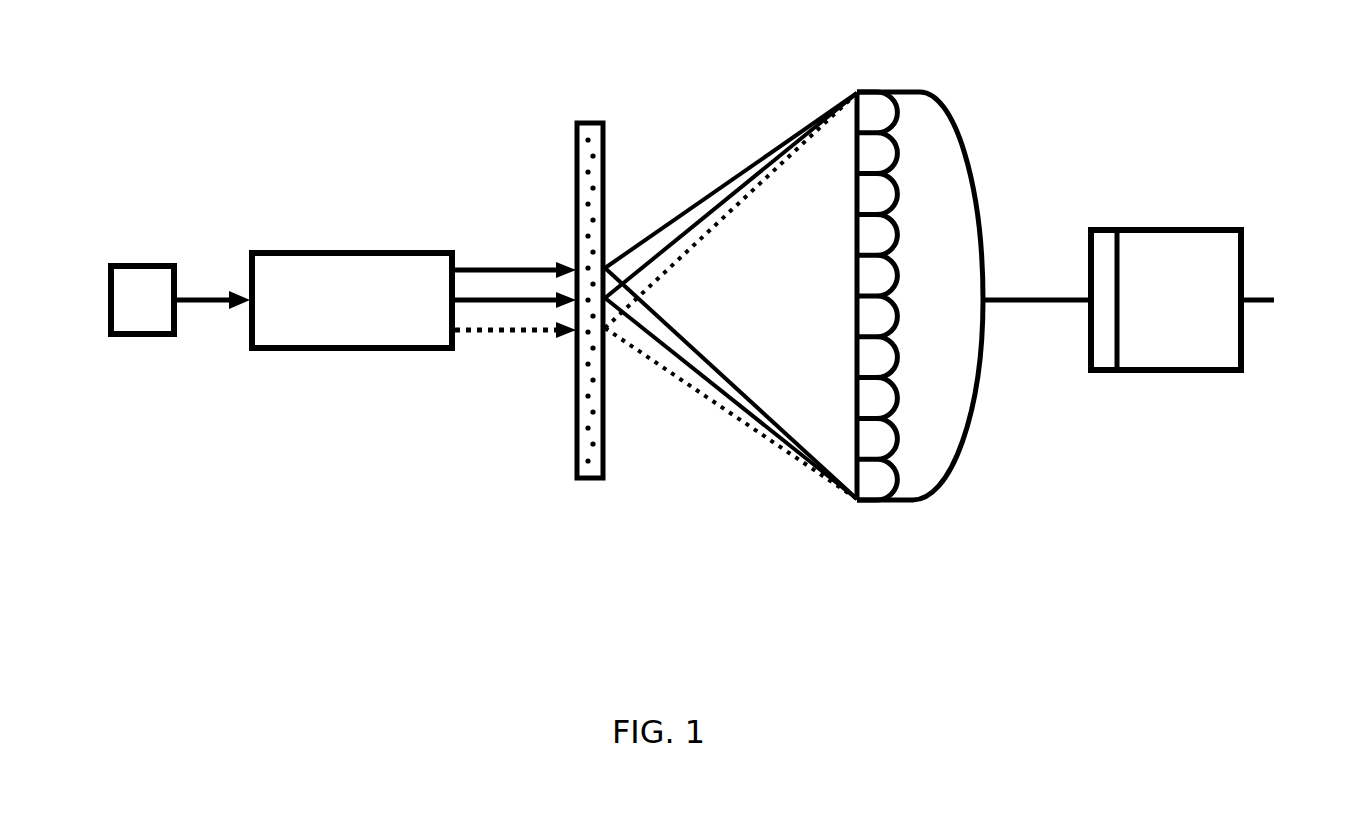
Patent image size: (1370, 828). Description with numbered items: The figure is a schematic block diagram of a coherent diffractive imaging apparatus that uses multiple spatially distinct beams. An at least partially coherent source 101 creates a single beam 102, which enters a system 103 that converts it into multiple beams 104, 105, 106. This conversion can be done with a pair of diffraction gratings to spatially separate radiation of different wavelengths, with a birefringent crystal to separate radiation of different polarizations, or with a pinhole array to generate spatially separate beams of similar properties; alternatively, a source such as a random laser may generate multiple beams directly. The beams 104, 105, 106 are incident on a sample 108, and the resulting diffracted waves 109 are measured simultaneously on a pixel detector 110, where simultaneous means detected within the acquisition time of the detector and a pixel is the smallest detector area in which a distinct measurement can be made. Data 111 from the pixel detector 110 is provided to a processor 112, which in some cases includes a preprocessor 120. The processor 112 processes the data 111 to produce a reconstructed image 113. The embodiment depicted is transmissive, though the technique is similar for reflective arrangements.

The at least partially coherent source 101 is at (138, 330).
The single beam 102 is at (211, 259).
The system 103 is at (352, 300).
The beam 104 is at (515, 261).
The beam 105 is at (515, 291).
The beam 106 is at (515, 321).
The sample 108 is at (589, 270).
The diffracted waves 109 is at (731, 296).
The pixel detector 110 is at (918, 267).
The data 111 is at (1035, 275).
The processor 112 is at (1166, 300).
The reconstructed image 113 is at (1295, 301).
The preprocessor 120 is at (1102, 245).